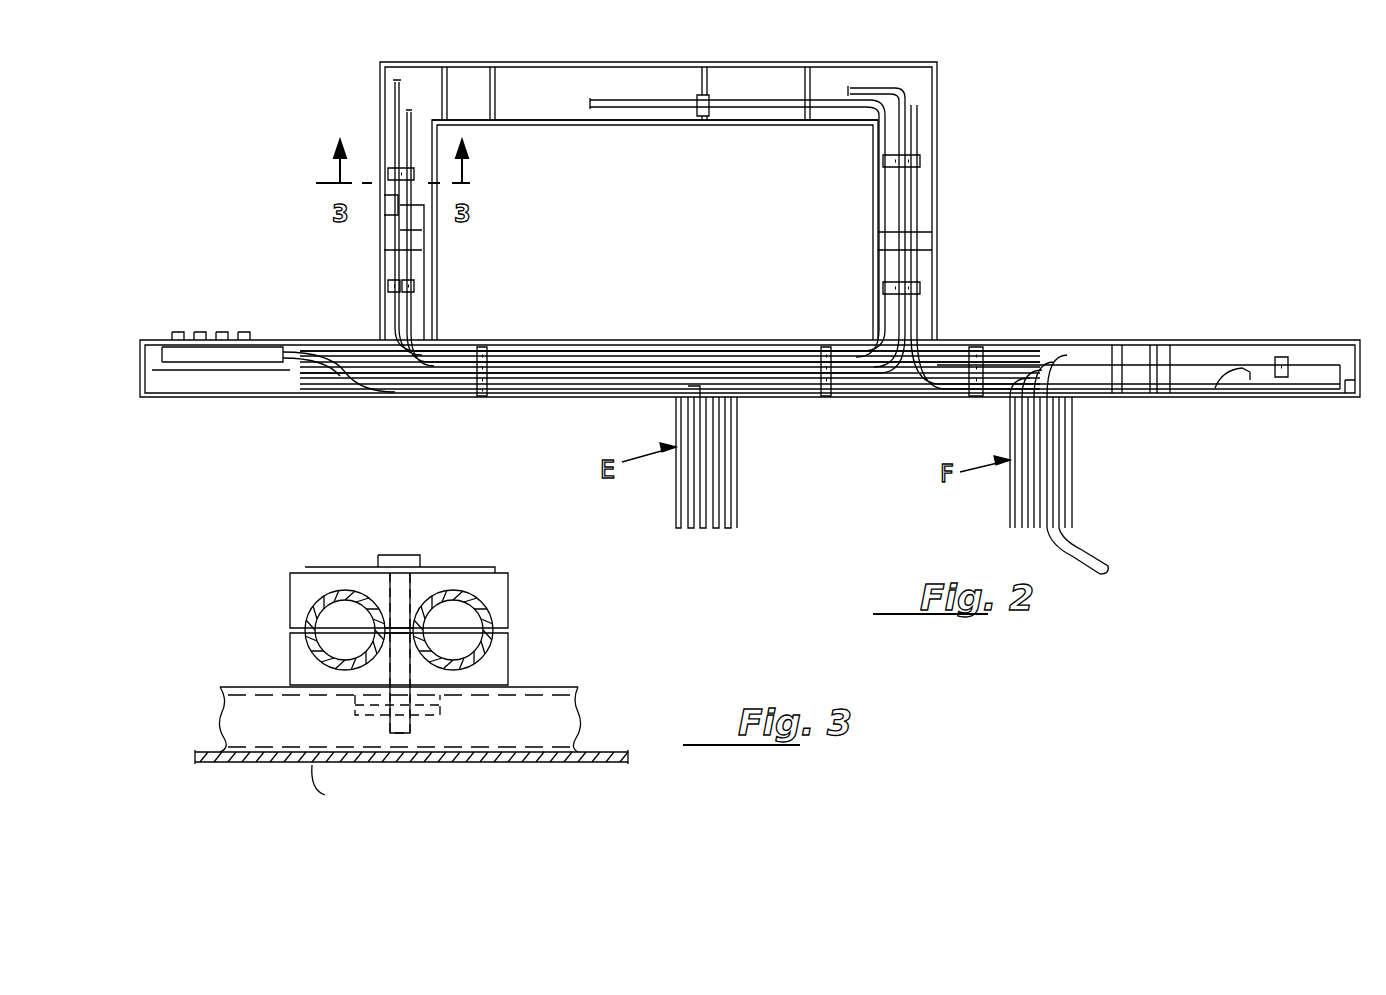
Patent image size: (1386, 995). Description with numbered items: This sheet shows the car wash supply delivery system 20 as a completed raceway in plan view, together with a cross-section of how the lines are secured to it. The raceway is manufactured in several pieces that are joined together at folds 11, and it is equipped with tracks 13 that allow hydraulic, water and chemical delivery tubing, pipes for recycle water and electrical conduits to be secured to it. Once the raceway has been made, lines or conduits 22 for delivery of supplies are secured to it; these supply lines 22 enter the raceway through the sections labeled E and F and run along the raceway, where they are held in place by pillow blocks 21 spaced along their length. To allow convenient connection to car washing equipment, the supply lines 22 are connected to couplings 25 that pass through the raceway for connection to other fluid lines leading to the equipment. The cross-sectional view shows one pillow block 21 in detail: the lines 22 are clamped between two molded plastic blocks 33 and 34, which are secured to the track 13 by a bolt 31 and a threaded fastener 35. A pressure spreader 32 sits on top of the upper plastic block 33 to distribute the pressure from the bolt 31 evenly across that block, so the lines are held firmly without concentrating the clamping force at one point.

In FIG. 2, the fold 11 is at (935, 240).
In FIG. 2, the track 13 is at (508, 110).
In FIG. 3, the track 13 is at (560, 722).
In FIG. 2, the car wash supply delivery system 20 is at (1015, 290).
In FIG. 2, the pillow block 21 is at (389, 165).
In FIG. 3, the pillow block 21 is at (560, 648).
In FIG. 2, the lines or conduits 22 is at (625, 357).
In FIG. 3, the lines or conduits 22 is at (318, 600).
In FIG. 2, the coupling 25 is at (410, 105).
In FIG. 3, the bolt 31 is at (400, 560).
In FIG. 3, the pressure spreader 32 is at (340, 570).
In FIG. 3, the molded plastic block 33 is at (297, 607).
In FIG. 3, the molded plastic block 34 is at (297, 652).
In FIG. 3, the threaded fastener 35 is at (420, 718).